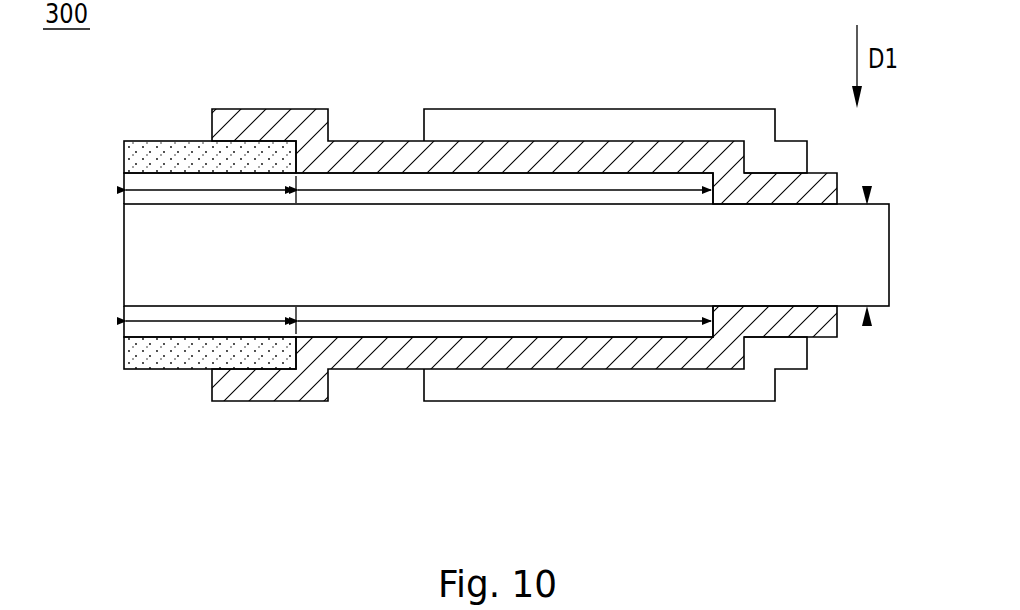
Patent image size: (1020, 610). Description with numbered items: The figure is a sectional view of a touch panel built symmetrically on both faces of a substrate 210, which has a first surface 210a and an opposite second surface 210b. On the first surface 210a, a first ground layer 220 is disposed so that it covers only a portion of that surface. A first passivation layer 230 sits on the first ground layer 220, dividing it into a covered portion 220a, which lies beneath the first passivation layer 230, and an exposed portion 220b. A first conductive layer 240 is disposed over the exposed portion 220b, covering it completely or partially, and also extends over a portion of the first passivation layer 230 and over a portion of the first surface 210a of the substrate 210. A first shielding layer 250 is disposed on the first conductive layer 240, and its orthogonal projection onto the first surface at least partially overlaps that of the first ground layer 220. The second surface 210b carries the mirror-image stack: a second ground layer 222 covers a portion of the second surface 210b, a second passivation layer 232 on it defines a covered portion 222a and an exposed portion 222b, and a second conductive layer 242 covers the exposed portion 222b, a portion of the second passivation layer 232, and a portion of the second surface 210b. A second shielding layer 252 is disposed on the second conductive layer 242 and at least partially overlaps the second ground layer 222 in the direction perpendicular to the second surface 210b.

The substrate 210 is at (867, 255).
The first surface 210a is at (868, 186).
The second surface 210b is at (868, 326).
The first ground layer 220 is at (125, 199).
The covered portion 220a is at (175, 190).
The exposed portion 220b is at (480, 190).
The second ground layer 222 is at (125, 312).
The covered portion 222a is at (175, 322).
The exposed portion 222b is at (480, 322).
The first passivation layer 230 is at (125, 157).
The second passivation layer 232 is at (125, 353).
The first conductive layer 240 is at (368, 155).
The second conductive layer 242 is at (368, 355).
The first shielding layer 250 is at (688, 118).
The second shielding layer 252 is at (688, 395).